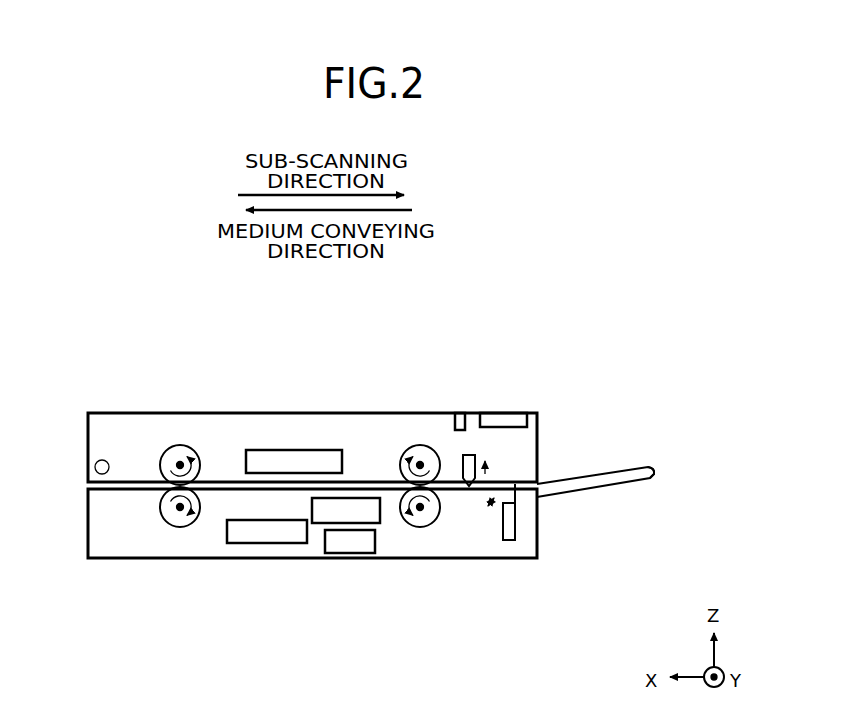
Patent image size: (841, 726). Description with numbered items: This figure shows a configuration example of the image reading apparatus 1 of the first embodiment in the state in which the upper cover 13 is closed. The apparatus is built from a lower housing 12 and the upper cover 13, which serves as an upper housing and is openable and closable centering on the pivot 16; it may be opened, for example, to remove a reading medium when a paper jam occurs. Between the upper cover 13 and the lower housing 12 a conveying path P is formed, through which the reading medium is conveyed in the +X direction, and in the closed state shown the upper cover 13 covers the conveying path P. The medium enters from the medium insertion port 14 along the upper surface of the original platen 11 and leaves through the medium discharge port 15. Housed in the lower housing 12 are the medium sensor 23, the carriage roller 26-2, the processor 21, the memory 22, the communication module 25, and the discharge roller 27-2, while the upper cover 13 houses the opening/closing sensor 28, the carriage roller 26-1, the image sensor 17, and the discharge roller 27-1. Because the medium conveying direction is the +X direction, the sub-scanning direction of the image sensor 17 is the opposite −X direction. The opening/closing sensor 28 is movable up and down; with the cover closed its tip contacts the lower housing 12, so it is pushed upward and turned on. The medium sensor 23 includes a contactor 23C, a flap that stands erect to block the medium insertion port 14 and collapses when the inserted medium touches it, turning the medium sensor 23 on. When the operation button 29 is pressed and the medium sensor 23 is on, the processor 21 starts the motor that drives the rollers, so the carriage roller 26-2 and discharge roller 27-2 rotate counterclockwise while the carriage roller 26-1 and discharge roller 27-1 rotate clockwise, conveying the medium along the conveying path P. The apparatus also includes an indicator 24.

The image reading apparatus 1 is at (331, 312).
The original platen 11 is at (656, 472).
The lower housing 12 is at (112, 546).
The upper cover 13 is at (120, 438).
The medium insertion port 14 is at (538, 486).
The medium discharge port 15 is at (90, 487).
The pivot 16 is at (96, 463).
The image sensor 17 is at (295, 450).
The processor 21 is at (317, 524).
The memory 22 is at (352, 554).
The medium sensor 23 is at (508, 527).
The contactor 23C is at (517, 496).
The indicator 24 is at (460, 413).
The communication module 25 is at (263, 544).
The carriage roller 26-1 is at (420, 445).
The carriage roller 26-2 is at (420, 528).
The discharge roller 27-1 is at (180, 445).
The discharge roller 27-2 is at (180, 528).
The opening/closing sensor 28 is at (476, 454).
The operation button 29 is at (505, 413).
The conveying path P is at (355, 480).